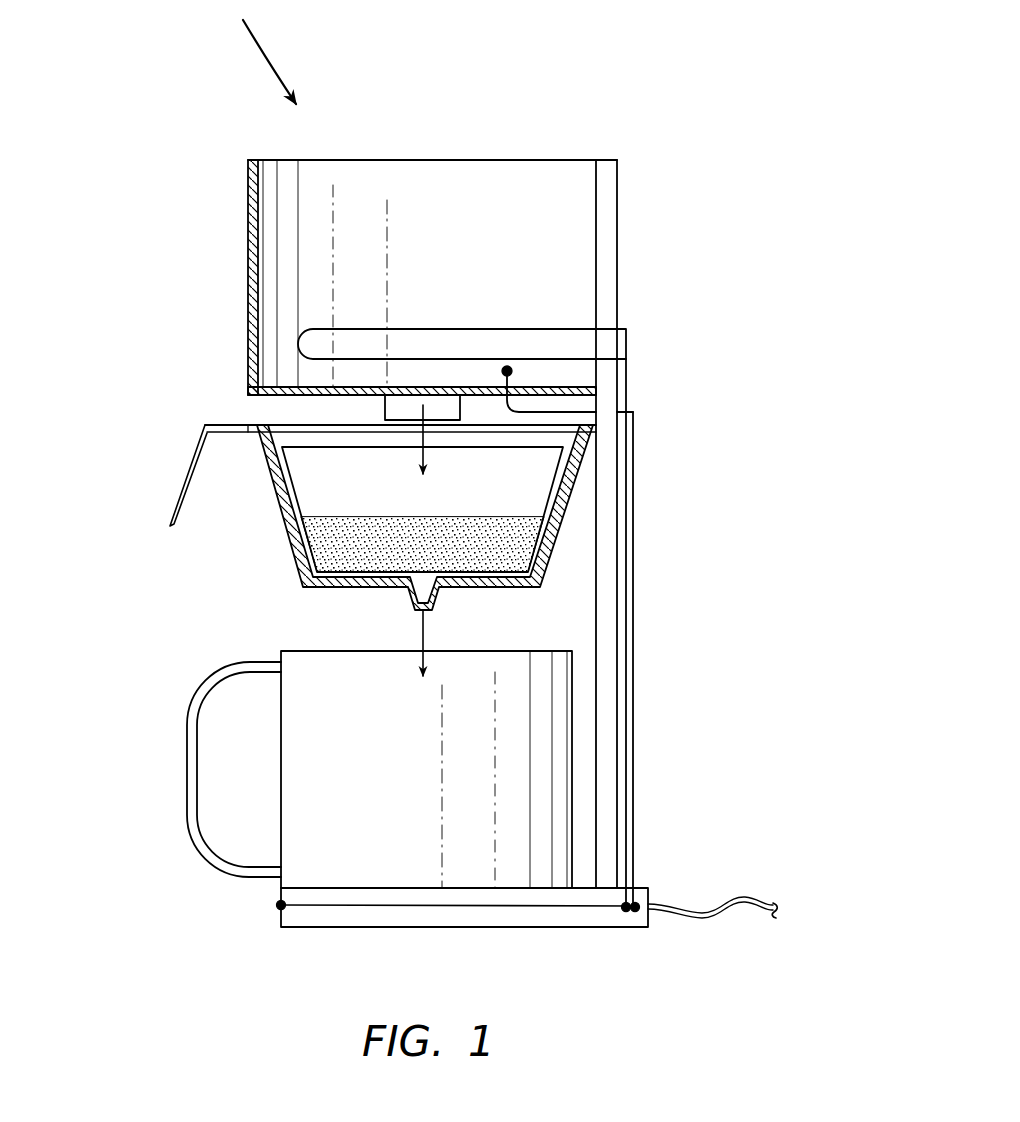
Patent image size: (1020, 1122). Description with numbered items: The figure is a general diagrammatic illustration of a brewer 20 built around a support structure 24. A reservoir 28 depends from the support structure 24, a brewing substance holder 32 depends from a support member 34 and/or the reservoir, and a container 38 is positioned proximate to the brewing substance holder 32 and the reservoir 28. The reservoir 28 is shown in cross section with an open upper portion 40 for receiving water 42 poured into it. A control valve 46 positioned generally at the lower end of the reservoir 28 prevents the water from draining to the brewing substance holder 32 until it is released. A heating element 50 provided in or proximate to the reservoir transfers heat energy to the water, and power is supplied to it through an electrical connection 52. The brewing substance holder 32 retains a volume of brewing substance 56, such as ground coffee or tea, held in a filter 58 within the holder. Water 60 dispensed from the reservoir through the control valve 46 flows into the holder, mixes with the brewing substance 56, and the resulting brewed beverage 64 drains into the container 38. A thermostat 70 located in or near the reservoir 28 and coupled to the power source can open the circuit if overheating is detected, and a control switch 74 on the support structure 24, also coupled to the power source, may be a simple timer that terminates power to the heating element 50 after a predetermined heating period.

The brewer 20 is at (690, 123).
The support structure 24 is at (623, 248).
The reservoir 28 is at (229, 218).
The brewing substance holder 32 is at (176, 477).
The support member 34 is at (263, 419).
The container 38 is at (171, 772).
The open upper portion 40 is at (377, 158).
The water 42 is at (273, 57).
The control valve 46 is at (381, 408).
The heating element 50 is at (340, 324).
The electrical connection 52 is at (723, 879).
The brewing substance 56 is at (341, 540).
The filter 58 is at (296, 480).
The water 60 is at (437, 467).
The brewed beverage 64 is at (418, 630).
The thermostat 70 is at (538, 375).
The control switch 74 is at (273, 905).